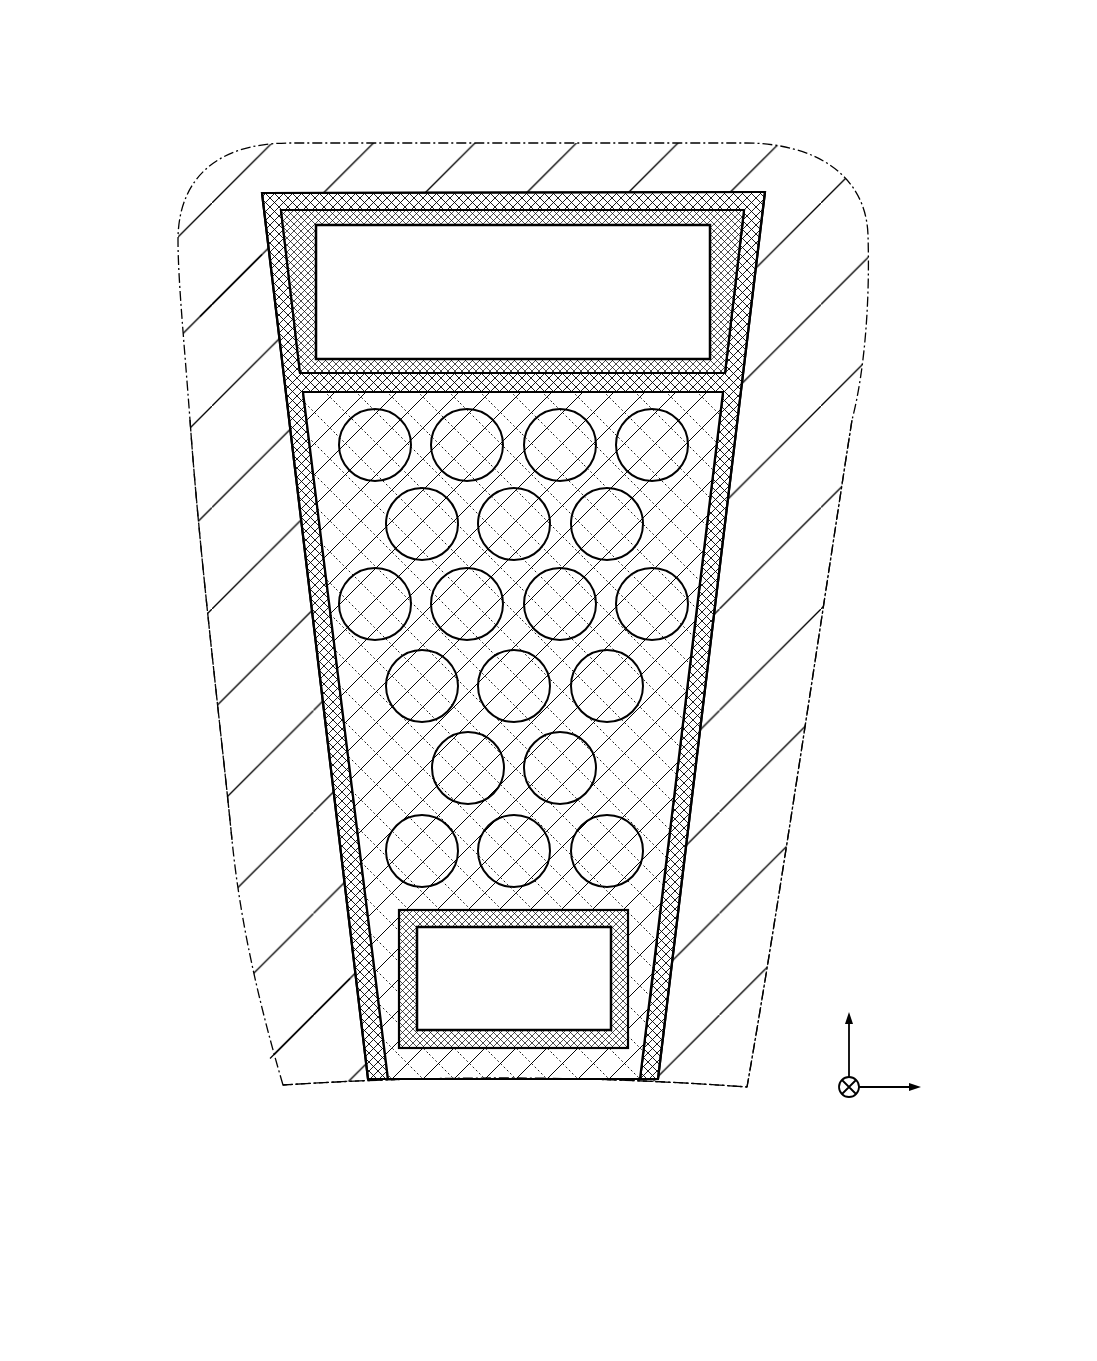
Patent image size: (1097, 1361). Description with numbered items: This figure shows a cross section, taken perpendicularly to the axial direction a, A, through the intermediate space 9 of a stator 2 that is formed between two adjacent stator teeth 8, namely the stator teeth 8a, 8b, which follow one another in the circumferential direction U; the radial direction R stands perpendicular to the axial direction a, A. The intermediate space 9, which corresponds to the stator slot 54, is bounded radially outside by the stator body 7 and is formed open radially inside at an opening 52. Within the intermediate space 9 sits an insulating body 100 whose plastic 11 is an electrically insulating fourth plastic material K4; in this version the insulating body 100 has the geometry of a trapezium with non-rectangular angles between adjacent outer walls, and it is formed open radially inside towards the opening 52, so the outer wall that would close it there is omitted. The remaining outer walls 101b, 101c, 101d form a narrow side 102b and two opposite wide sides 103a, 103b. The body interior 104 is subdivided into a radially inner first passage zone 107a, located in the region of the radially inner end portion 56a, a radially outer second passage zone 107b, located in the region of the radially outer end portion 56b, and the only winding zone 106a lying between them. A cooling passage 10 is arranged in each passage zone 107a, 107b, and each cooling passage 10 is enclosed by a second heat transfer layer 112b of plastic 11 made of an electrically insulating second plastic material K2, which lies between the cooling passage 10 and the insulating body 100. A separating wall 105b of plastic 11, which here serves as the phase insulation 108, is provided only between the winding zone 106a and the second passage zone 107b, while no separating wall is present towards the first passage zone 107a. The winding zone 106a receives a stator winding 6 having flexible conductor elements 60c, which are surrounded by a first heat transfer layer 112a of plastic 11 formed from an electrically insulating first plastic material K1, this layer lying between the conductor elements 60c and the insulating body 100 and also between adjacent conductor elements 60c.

The stator 2 is at (858, 137).
The stator body 7 is at (733, 152).
The stator teeth 8 is at (514, 615).
The stator tooth 8a is at (222, 578).
The stator tooth 8b is at (812, 605).
The radially inner end portion 56a is at (328, 1034).
The radially outer end portion 56b is at (241, 268).
The plastic 11 is at (492, 581).
The insulating body 100 is at (507, 581).
The fourth plastic material K4 is at (683, 860).
The outer wall 101b is at (513, 138).
The narrow side 102b is at (510, 192).
The outer wall 101c is at (226, 636).
The wide side 103a is at (350, 772).
The outer wall 101d is at (794, 635).
The wide side 103b is at (692, 763).
The first passage zone 107a is at (643, 945).
The second passage zone 107b is at (737, 265).
The first winding zone 106a is at (706, 572).
The second separating wall 105b is at (513, 349).
The phase insulation 108 is at (412, 385).
The body interior 104 is at (432, 681).
The first heat transfer layer 112a is at (432, 681).
The first plastic material K1 is at (662, 677).
The stator winding 6 is at (641, 390).
The flexible conductor elements 60c is at (392, 457).
The second heat transfer layer 112b is at (399, 619).
The second plastic material K2 is at (290, 216).
The cooling passage 10 is at (533, 288).
The opening 52 is at (510, 1081).
The intermediate space 9 is at (515, 1150).
The stator slot 54 is at (478, 1092).
The radial direction R is at (851, 1048).
The circumferential direction U is at (887, 1090).
The axial direction A is at (845, 1125).
The axial direction a is at (845, 1098).